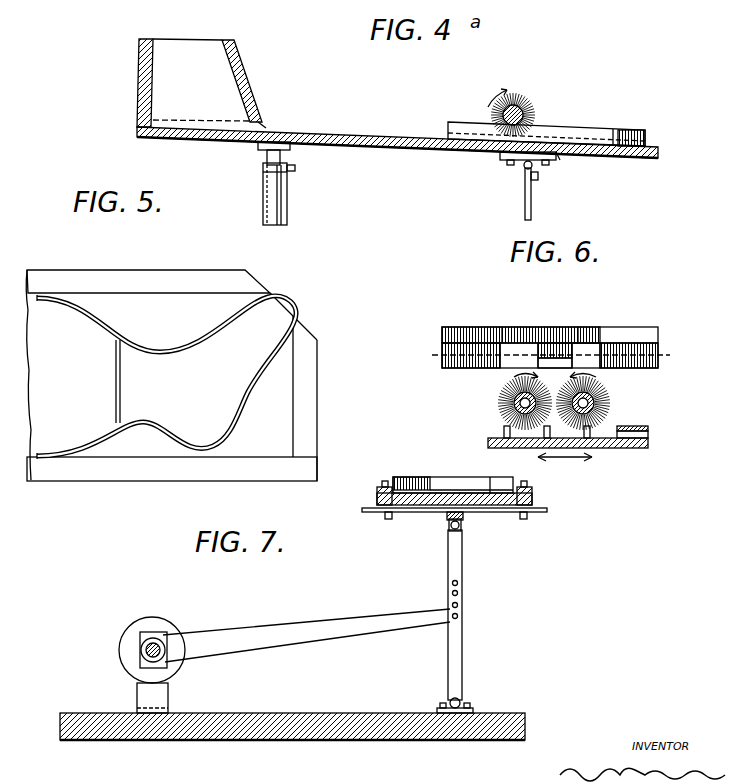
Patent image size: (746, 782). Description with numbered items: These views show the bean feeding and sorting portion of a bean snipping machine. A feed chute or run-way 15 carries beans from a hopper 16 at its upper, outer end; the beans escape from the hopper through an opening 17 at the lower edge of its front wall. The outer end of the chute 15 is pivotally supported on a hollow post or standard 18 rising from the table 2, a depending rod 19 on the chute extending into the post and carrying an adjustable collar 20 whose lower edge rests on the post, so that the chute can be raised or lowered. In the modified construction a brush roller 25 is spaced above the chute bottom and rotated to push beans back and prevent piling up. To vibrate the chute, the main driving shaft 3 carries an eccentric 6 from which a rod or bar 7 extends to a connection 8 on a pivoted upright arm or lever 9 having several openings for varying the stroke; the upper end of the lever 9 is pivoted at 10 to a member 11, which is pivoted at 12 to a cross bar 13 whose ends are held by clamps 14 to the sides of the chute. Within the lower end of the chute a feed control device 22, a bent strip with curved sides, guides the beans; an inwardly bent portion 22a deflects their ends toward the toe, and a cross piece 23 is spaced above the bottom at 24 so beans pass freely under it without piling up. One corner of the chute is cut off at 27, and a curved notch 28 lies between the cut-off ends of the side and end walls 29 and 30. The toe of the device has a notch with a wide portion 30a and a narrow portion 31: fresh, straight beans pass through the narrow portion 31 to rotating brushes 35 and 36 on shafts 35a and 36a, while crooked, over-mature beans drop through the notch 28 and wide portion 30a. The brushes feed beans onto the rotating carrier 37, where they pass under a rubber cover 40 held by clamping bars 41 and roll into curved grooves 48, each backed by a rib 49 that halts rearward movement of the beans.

In FIG. 7, the table 2 is at (290, 733).
In FIG. 7, the main driving shaft 3 is at (166, 657).
In FIG. 7, the eccentric 6 is at (140, 652).
In FIG. 7, the rod or bar 7 is at (283, 638).
In FIG. 7, the connection 8 is at (465, 615).
In FIG. 4A, the pivoted up-right arm or lever 9 is at (532, 213).
In FIG. 7, the pivoted up-right arm or lever 9 is at (462, 645).
In FIG. 4A, the pivotal connection 10 is at (538, 176).
In FIG. 6, the pivotal connection 10 is at (452, 527).
In FIG. 4A, the member 11 is at (556, 160).
In FIG. 6, the member 11 is at (462, 517).
In FIG. 4A, the pivot 12 is at (522, 167).
In FIG. 6, the pivot 12 is at (445, 514).
In FIG. 4A, the cross bar 13 is at (549, 146).
In FIG. 6, the cross bar 13 is at (500, 513).
In FIG. 4A, the clamps 14 is at (502, 157).
In FIG. 6, the clamps 14 is at (385, 516).
In FIG. 4A, the feed chute or run-way 15 is at (357, 150).
In FIG. 5, the feed chute or run-way 15 is at (108, 450).
In FIG. 6, the feed chute or run-way 15 is at (455, 493).
In FIG. 4A, the hopper 16 is at (217, 63).
In FIG. 4A, the opening 17 is at (263, 127).
In FIG. 4A, the hollow post or standard 18 is at (288, 208).
In FIG. 4A, the depending rod 19 is at (267, 157).
In FIG. 4A, the adjustable collar 20 is at (263, 170).
In FIG. 4A, the feed control device 22 is at (630, 130).
In FIG. 5, the feed control device 22 is at (153, 345).
In FIG. 5, the inwardly bent portion 22a is at (247, 392).
In FIG. 5, the cross piece 23 is at (121, 395).
In FIG. 4A, the spacing 24 is at (497, 127).
In FIG. 6, the spacing 24 is at (440, 480).
In FIG. 4A, the brush roller 25 is at (517, 97).
In FIG. 5, the cut off corner 27 is at (302, 322).
In FIG. 5, the curved notch 28 is at (267, 302).
In FIG. 6, the curved notch 28 is at (545, 327).
In FIG. 5, the side wall 29 is at (193, 283).
In FIG. 6, the side wall 29 is at (660, 357).
In FIG. 5, the end wall 30 is at (308, 385).
In FIG. 6, the end wall 30 is at (450, 357).
In FIG. 6, the relatively wide portion of notch 30a is at (565, 346).
In FIG. 5, the relatively narrow portion of notch 31 is at (280, 297).
In FIG. 6, the relatively narrow portion of notch 31 is at (548, 357).
In FIG. 6, the rotating brush 35 is at (500, 398).
In FIG. 6, the shaft 35a is at (504, 408).
In FIG. 6, the rotating brush 36 is at (612, 390).
In FIG. 6, the shaft 36a is at (612, 408).
In FIG. 6, the annular moving part or carrier 37 is at (625, 449).
In FIG. 6, the cover 40 is at (648, 434).
In FIG. 6, the clamping bars 41 is at (648, 428).
In FIG. 6, the grooves 48 is at (510, 449).
In FIG. 6, the rib 49 is at (550, 449).